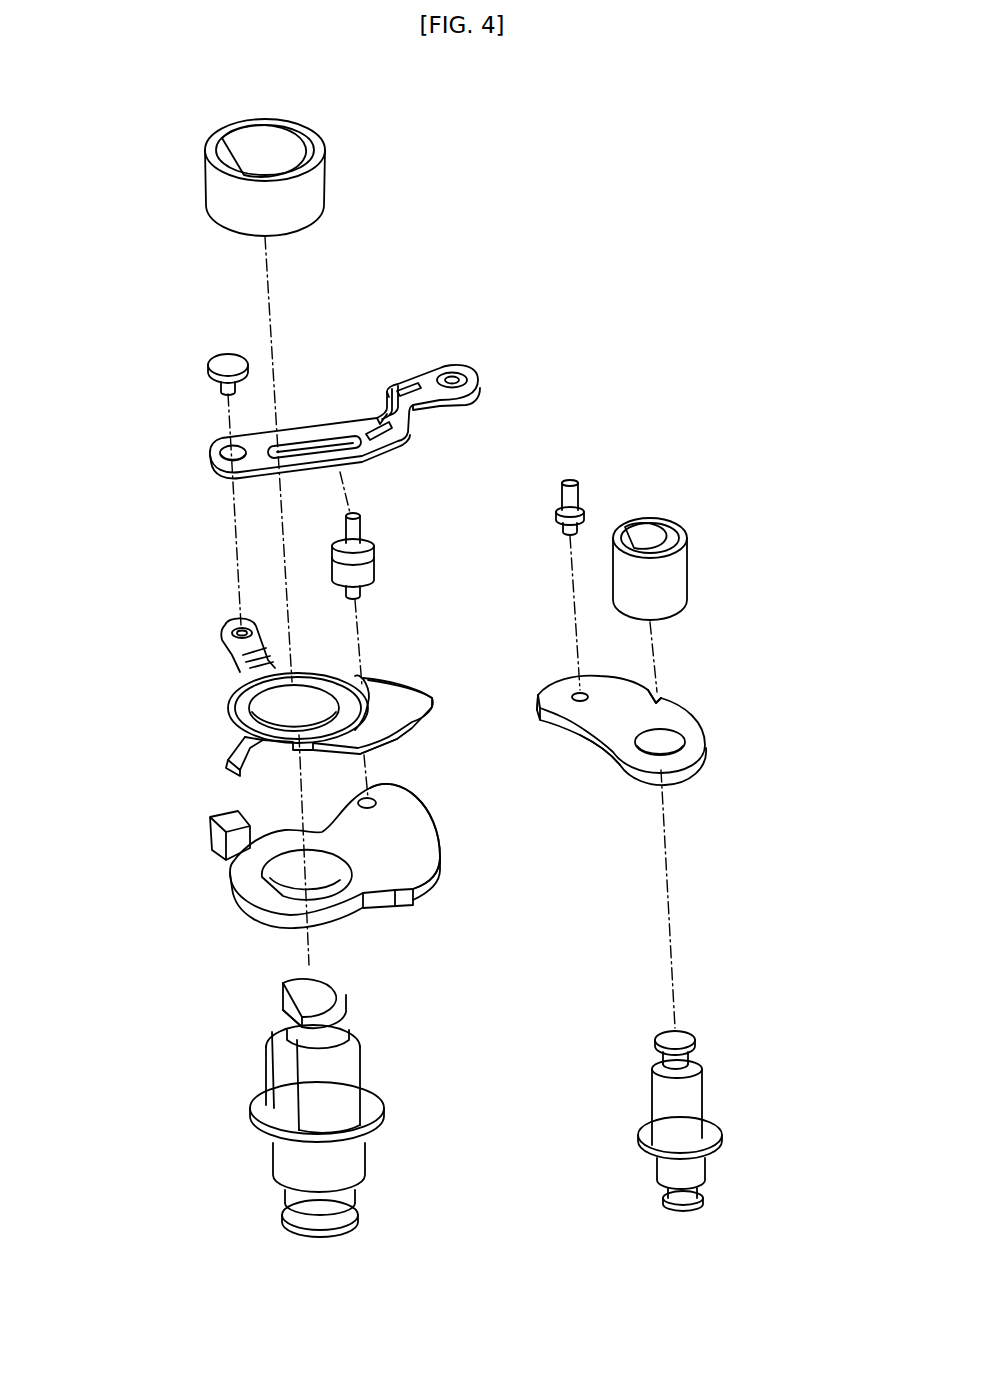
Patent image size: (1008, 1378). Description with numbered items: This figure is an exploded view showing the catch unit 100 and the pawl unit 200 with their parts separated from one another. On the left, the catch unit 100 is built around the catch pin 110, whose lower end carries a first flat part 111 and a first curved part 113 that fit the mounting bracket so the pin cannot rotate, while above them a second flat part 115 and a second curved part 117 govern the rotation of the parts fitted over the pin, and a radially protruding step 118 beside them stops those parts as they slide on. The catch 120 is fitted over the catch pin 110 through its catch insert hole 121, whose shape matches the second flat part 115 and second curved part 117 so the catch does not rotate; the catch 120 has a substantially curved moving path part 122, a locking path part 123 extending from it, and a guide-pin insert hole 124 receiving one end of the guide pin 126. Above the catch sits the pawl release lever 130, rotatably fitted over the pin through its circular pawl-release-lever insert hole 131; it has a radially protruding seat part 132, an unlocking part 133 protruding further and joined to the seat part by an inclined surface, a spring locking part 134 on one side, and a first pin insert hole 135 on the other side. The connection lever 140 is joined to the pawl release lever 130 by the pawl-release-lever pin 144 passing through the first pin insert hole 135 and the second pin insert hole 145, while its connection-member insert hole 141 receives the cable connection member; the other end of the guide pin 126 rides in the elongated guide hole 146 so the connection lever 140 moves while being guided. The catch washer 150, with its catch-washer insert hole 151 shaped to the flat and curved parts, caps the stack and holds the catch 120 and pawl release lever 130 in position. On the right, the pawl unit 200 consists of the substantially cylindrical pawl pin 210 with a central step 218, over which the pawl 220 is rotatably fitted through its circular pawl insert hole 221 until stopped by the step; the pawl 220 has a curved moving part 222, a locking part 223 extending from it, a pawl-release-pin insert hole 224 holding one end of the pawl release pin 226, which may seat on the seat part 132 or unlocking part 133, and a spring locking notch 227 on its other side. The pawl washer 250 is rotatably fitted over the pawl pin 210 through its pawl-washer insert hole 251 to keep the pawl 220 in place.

The catch unit 100 is at (333, 1243).
The catch pin 110 is at (285, 1170).
The first flat part 111 is at (290, 1012).
The first curved part 113 is at (345, 1012).
The second flat part 115 is at (282, 1070).
The second curved part 117 is at (340, 1080).
The step 118 is at (255, 1112).
The catch 120 is at (245, 884).
The catch insert hole 121 is at (315, 880).
The moving path part 122 is at (428, 880).
The locking path part 123 is at (372, 908).
The guide-pin insert hole 124 is at (370, 803).
The guide pin 126 is at (366, 572).
The pawl release lever 130 is at (240, 708).
The pawl-release-lever insert hole 131 is at (308, 722).
The seat part 132 is at (385, 746).
The unlocking part 133 is at (425, 698).
The spring locking part 134 is at (225, 750).
The first pin insert hole 135 is at (228, 630).
The connection lever 140 is at (430, 380).
The connection-member insert hole 141 is at (452, 378).
The pawl-release-lever pin 144 is at (220, 362).
The second pin insert hole 145 is at (226, 450).
The guide hole 146 is at (327, 445).
The catch washer 150 is at (215, 195).
The catch-washer insert hole 151 is at (275, 150).
The pawl unit 200 is at (685, 1214).
The pawl pin 210 is at (700, 1165).
The step 218 is at (713, 1125).
The pawl 220 is at (690, 745).
The pawl insert hole 221 is at (665, 740).
The moving part 222 is at (605, 745).
The locking part 223 is at (563, 688).
The pawl-release-pin insert hole 224 is at (582, 698).
The pawl release pin 226 is at (562, 500).
The spring locking notch 227 is at (660, 695).
The pawl washer 250 is at (675, 578).
The pawl-washer insert hole 251 is at (650, 540).